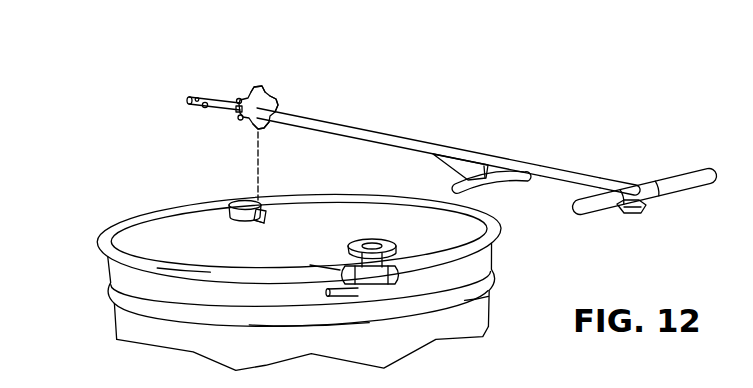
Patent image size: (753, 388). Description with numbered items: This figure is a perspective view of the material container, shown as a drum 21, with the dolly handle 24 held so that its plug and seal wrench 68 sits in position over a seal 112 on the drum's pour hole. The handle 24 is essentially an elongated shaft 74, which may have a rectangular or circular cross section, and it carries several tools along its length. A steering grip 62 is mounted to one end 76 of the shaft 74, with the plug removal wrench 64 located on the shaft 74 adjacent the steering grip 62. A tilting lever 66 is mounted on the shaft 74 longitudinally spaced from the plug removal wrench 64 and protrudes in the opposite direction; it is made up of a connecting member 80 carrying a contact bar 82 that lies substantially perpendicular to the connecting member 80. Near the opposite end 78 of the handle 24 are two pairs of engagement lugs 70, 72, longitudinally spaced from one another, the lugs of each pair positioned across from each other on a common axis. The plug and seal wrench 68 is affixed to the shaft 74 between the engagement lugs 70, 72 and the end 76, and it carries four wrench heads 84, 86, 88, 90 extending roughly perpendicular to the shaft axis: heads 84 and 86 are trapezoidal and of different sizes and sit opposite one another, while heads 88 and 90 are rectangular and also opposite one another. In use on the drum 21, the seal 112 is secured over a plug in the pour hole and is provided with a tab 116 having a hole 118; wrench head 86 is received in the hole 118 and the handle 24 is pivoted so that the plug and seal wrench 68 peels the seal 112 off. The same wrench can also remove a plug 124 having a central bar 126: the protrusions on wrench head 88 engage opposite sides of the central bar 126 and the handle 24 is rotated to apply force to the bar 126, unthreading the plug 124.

The drum 21 is at (107, 334).
The handle 24 is at (503, 148).
The steering grip 62 is at (678, 188).
The plug removal wrench 64 is at (629, 228).
The tilting lever 66 is at (461, 166).
The plug and seal wrench 68 is at (281, 79).
The engagement lugs 70 is at (205, 102).
The engagement lugs 72 is at (197, 96).
The elongated shaft 74 is at (551, 174).
The end 76 is at (635, 185).
The end 78 is at (187, 97).
The connecting member 80 is at (465, 160).
The contact bar 82 is at (488, 186).
The wrench head 84 is at (254, 87).
The wrench head 86 is at (264, 124).
The wrench head 88 is at (239, 114).
The wrench head 90 is at (279, 101).
The seal 112 is at (227, 202).
The tab 116 is at (264, 221).
The hole 118 is at (264, 217).
The plug 124 is at (427, 242).
The central bar 126 is at (327, 291).